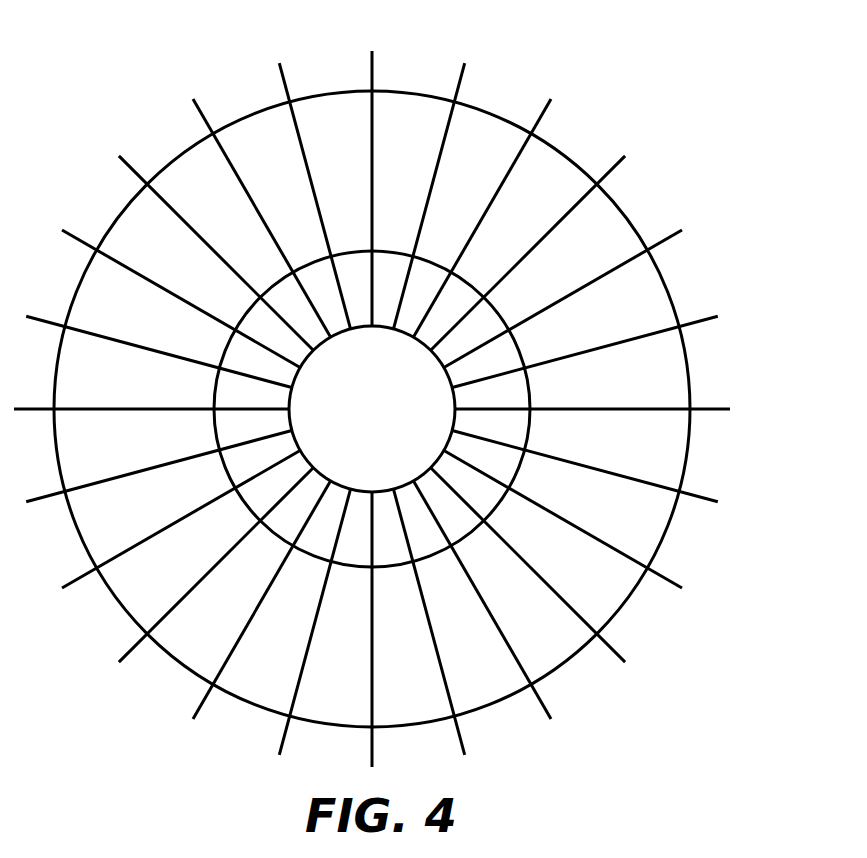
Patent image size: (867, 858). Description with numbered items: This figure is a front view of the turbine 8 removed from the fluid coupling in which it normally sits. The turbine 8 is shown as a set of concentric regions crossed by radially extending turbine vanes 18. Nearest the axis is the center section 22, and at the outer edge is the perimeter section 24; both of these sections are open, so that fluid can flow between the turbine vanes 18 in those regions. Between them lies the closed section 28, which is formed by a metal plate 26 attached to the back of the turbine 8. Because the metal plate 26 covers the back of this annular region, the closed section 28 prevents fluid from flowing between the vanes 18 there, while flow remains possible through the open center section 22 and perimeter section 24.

The turbine 8 is at (158, 55).
The turbine vanes 18 is at (457, 83).
The center section 22 is at (372, 382).
The perimeter section 24 is at (314, 191).
The metal plate 26 is at (560, 152).
The closed section 28 is at (372, 364).